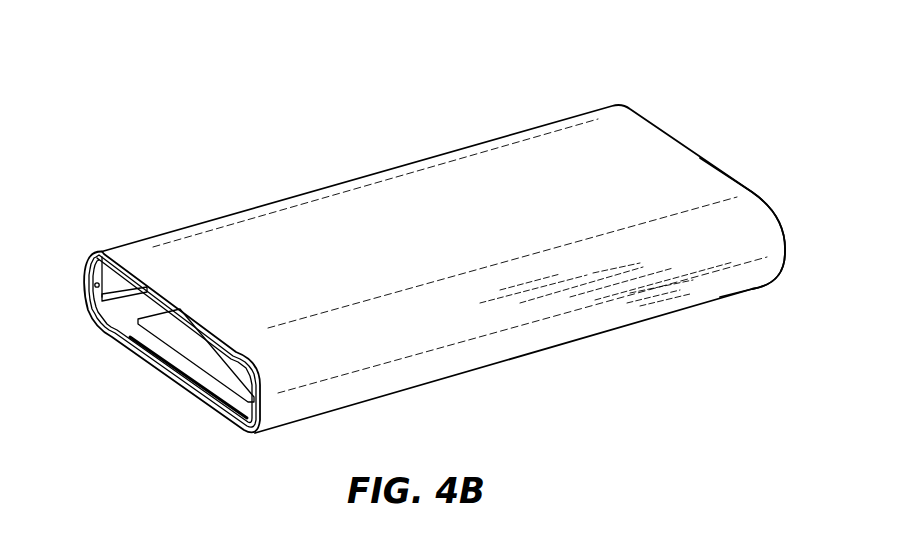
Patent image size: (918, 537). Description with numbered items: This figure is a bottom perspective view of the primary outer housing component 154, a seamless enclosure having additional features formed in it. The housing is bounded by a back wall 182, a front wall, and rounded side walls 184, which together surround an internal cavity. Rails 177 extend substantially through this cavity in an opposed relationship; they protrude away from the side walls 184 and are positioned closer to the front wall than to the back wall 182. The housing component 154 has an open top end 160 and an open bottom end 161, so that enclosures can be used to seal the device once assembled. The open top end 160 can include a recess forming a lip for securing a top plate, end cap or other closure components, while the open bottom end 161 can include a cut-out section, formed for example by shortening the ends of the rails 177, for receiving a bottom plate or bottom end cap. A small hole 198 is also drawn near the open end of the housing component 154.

The primary outer housing component 154 is at (275, 127).
The back wall 182 is at (513, 192).
The open bottom end 161 is at (748, 172).
The rounded side walls 184 is at (477, 335).
The hole 198 is at (102, 299).
The rails 177 is at (126, 303).
The open top end 160 is at (210, 362).